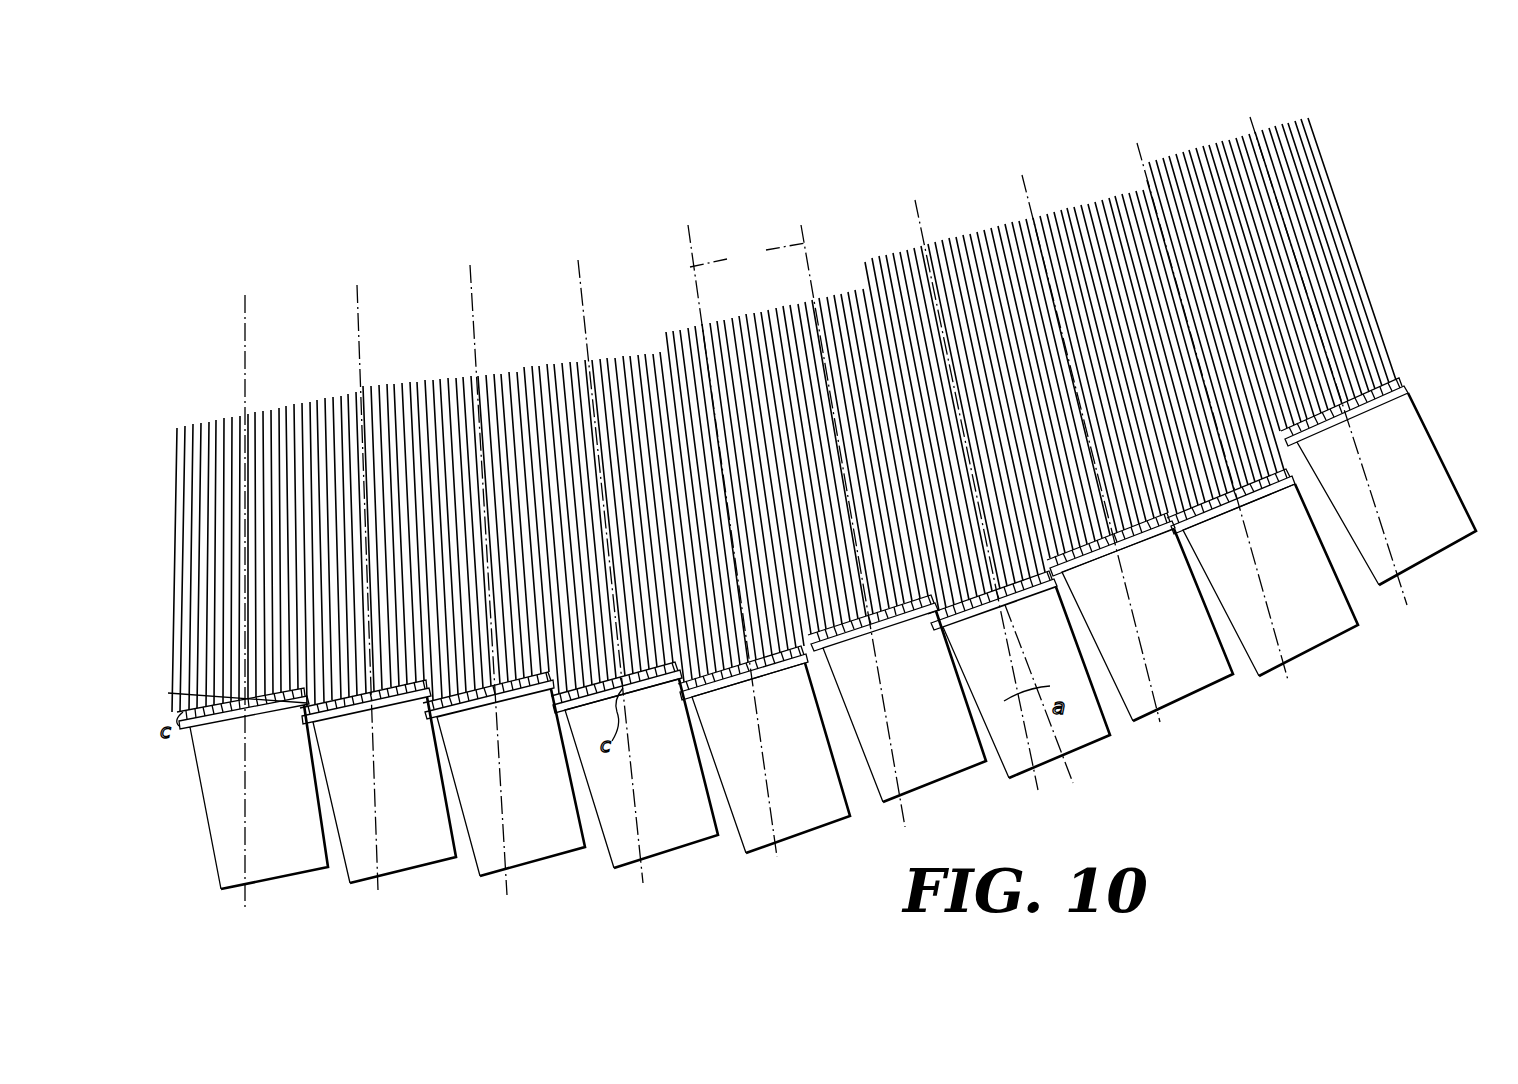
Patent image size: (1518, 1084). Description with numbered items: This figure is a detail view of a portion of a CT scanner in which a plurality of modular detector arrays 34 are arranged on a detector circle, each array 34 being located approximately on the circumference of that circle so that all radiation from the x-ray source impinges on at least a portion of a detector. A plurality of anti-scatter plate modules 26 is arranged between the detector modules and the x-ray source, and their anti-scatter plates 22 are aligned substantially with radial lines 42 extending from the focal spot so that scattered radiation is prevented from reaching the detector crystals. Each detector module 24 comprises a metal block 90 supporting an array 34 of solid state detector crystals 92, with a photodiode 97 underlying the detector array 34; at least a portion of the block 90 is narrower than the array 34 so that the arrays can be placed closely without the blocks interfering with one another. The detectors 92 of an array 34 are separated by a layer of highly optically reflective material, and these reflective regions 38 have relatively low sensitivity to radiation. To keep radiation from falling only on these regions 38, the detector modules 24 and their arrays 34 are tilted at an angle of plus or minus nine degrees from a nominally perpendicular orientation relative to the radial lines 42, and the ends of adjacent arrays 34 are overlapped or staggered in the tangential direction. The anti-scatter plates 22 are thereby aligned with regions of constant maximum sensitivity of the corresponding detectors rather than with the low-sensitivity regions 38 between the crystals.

The anti-scatter plates 22 is at (784, 415).
The detector module 24 is at (1134, 709).
The anti-scatter plate modules 26 is at (430, 342).
The modular detector array 34 is at (1258, 508).
The regions of relatively low sensitivity to radiation 38 is at (724, 688).
The radial lines 42 is at (747, 256).
The metal block 90 is at (812, 790).
The solid state detector crystals 92 is at (512, 698).
The photodiode 97 is at (633, 690).